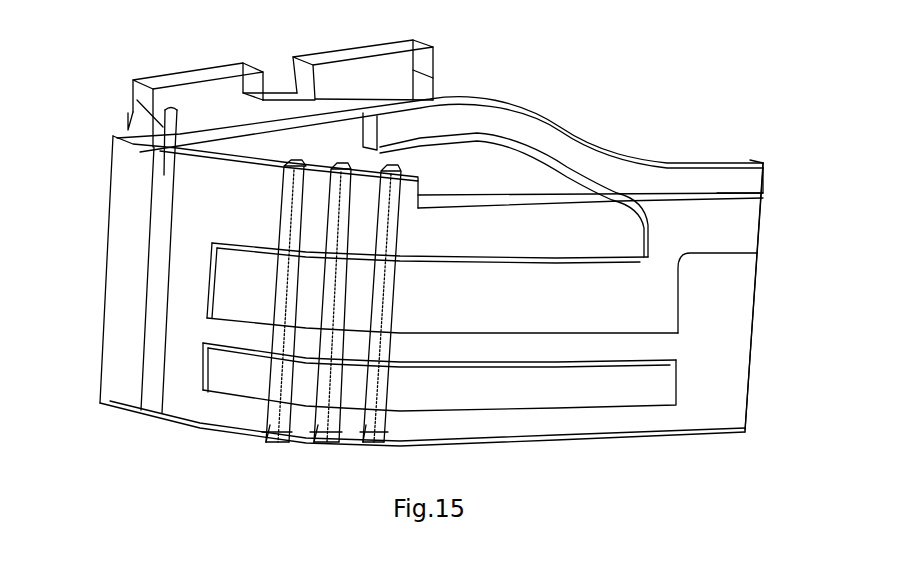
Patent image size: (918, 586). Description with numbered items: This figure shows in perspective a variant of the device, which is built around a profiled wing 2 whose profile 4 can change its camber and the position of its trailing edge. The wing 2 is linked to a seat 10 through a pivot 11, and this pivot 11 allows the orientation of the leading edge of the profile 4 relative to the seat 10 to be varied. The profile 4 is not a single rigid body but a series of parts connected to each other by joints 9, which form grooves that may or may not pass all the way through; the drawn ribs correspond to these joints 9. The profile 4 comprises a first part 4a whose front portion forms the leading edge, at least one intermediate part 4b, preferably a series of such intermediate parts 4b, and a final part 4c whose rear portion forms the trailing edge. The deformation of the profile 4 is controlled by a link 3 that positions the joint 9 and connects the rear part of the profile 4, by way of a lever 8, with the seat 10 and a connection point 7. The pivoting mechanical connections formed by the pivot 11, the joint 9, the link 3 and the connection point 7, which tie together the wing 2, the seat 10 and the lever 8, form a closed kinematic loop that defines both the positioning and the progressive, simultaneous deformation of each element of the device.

The profiled wing 2 is at (202, 432).
The link 3 is at (717, 193).
The profile 4 is at (127, 242).
The first part 4a is at (185, 375).
The intermediate part 4b is at (353, 423).
The final part 4c is at (723, 390).
The connection point 7 is at (460, 115).
The lever 8 is at (638, 180).
The joint 9 is at (295, 297).
The seat 10 is at (338, 80).
The pivot 11 is at (127, 92).